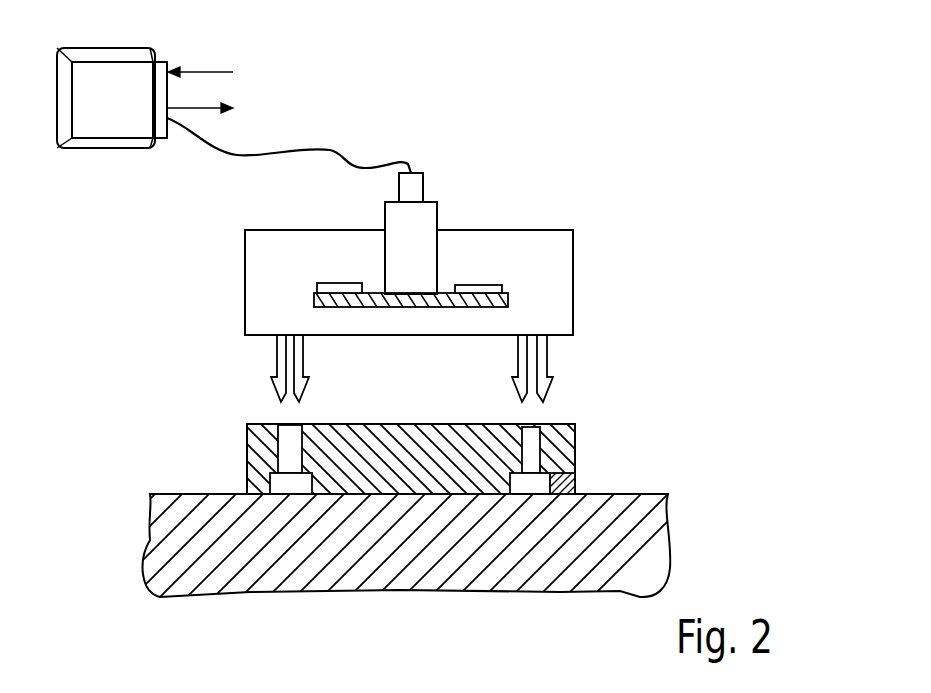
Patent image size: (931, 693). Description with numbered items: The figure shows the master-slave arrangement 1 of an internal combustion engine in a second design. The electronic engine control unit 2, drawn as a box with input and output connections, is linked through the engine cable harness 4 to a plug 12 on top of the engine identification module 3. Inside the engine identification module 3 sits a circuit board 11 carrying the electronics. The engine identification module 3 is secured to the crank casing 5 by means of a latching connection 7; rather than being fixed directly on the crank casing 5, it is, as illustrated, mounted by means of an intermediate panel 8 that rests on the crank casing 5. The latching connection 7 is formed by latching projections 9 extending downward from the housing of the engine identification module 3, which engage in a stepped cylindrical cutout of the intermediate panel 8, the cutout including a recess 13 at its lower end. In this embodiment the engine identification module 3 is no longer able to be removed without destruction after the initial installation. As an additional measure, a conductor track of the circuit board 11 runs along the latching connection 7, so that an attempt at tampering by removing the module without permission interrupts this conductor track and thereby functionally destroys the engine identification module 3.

The master-slave arrangement 1 is at (473, 127).
The electronic engine control unit 2 is at (103, 120).
The engine identification module 3 is at (487, 230).
The engine cable harness 4 is at (332, 148).
The crank casing 5 is at (657, 492).
The latching connection 7 is at (248, 372).
The intermediate panel 8 is at (573, 445).
The latching projection 9 is at (306, 381).
The circuit board 11 is at (508, 298).
The plug 12 is at (426, 220).
The recess 13 is at (558, 480).